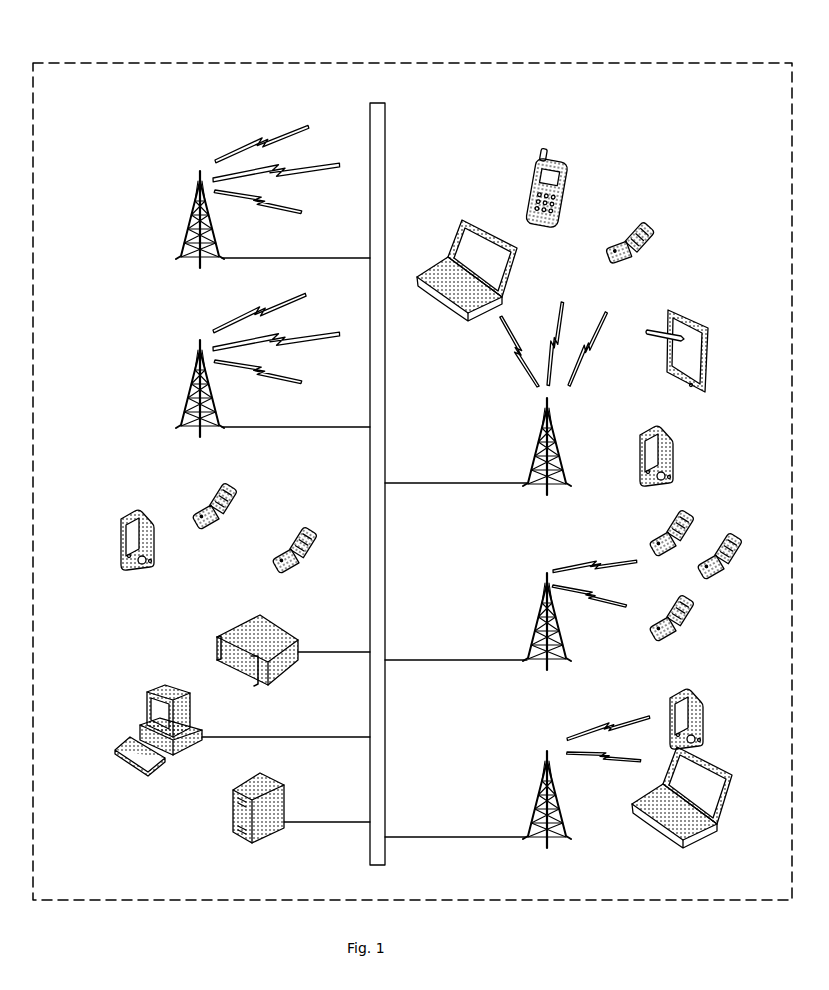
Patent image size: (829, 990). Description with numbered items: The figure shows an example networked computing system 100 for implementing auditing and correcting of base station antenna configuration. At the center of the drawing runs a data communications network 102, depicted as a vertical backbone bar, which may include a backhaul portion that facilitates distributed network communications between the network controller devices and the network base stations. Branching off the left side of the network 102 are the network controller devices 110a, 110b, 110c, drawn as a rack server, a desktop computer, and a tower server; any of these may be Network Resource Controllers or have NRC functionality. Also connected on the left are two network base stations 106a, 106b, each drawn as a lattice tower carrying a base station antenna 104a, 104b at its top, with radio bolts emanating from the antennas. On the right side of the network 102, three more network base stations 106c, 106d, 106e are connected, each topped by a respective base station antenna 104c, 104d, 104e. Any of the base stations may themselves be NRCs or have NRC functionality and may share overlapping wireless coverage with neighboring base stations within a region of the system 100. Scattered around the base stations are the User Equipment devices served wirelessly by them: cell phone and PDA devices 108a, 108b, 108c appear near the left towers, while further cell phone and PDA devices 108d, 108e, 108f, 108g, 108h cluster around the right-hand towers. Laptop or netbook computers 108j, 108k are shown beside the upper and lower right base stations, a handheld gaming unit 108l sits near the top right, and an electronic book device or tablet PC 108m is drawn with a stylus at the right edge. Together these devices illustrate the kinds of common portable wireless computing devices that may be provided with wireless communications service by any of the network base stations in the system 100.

The networked computing system 100 is at (286, 40).
The data communications network 102 is at (370, 117).
The base station antenna 104a is at (223, 196).
The base station antenna 104b is at (220, 364).
The base station antenna 104c is at (558, 781).
The base station antenna 104d is at (555, 613).
The base station antenna 104e is at (555, 398).
The network base station 106a is at (200, 174).
The network base station 106b is at (175, 400).
The network base station 106c is at (531, 820).
The network base station 106d is at (530, 627).
The network base station 106e is at (565, 456).
The cell phone/PDA device 108a is at (122, 532).
The cell phone/PDA device 108b is at (210, 494).
The cell phone/PDA device 108c is at (283, 569).
The cell phone/PDA device 108d is at (701, 698).
The cell phone/PDA device 108e is at (676, 639).
The cell phone/PDA device 108f is at (732, 573).
The cell phone/PDA device 108g is at (686, 514).
The cell phone/PDA device 108h is at (653, 228).
The laptop/netbook computer 108j is at (704, 754).
The laptop/netbook computer 108k is at (462, 221).
The handheld gaming unit 108l is at (567, 183).
The electronic book device or tablet PC 108m is at (709, 331).
The network controller device 110a is at (217, 652).
The network controller device 110b is at (147, 695).
The network controller device 110c is at (233, 828).